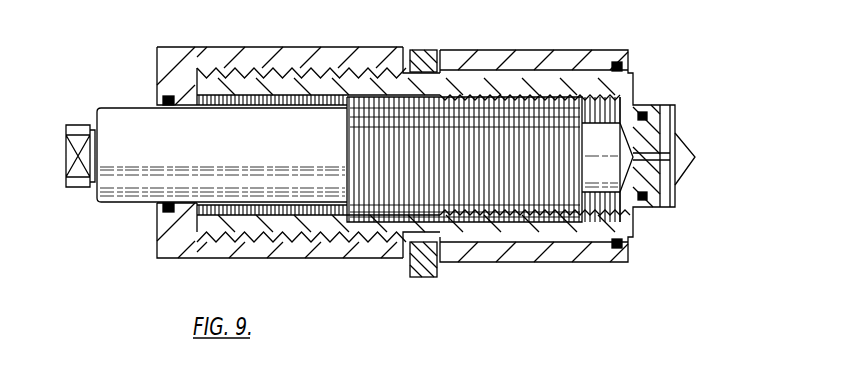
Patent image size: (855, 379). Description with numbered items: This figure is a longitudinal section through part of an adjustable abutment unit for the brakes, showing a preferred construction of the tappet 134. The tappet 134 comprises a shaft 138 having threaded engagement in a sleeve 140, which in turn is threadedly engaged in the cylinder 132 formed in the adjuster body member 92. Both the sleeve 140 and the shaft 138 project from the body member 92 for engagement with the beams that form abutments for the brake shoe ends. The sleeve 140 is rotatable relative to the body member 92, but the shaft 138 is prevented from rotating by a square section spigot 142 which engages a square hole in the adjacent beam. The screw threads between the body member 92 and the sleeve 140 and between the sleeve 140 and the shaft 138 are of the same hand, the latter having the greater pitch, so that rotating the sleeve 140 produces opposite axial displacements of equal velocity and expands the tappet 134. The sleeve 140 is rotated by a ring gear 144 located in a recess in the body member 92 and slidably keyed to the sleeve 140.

The adjuster body member 92 is at (549, 50).
The cylinder 132 is at (292, 76).
The tappet 134 is at (186, 78).
The shaft 138 is at (282, 156).
The sleeve 140 is at (570, 227).
The square section spigot 142 is at (66, 153).
The ring gear 144 is at (437, 277).